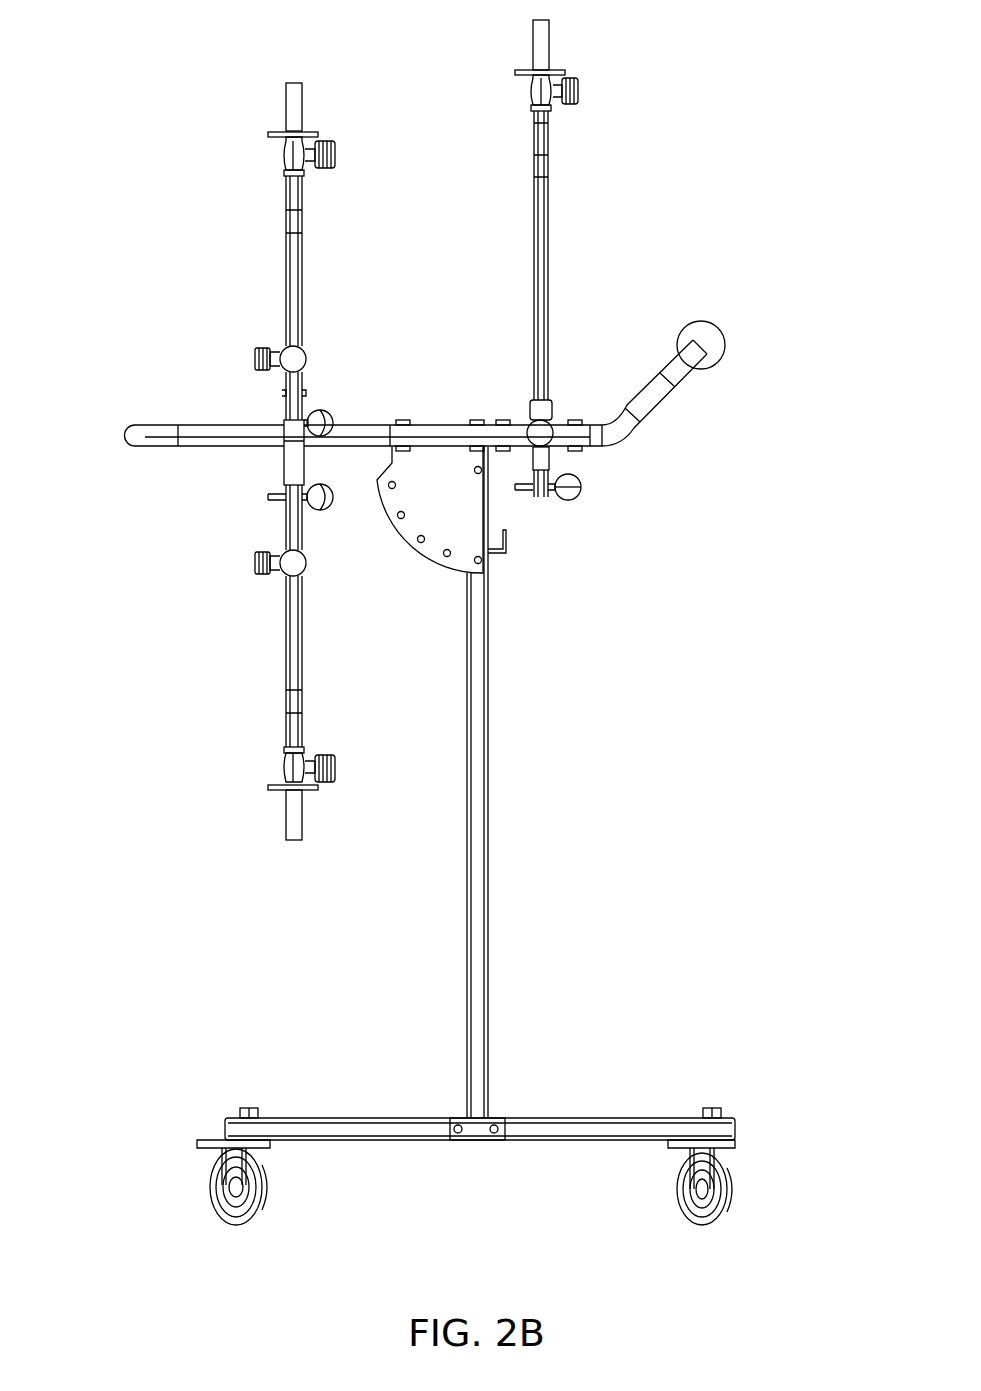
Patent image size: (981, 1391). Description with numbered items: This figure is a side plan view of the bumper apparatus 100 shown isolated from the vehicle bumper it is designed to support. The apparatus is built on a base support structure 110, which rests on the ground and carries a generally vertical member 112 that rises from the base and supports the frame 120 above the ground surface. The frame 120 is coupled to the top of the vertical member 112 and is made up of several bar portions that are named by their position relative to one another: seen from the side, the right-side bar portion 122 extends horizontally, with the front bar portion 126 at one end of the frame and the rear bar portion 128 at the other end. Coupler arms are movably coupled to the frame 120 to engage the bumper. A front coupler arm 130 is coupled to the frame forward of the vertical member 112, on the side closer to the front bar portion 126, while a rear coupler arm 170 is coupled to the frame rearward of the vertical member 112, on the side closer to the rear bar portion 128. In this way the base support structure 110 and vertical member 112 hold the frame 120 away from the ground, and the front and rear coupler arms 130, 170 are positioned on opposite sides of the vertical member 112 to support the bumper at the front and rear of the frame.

The bumper apparatus 100 is at (180, 55).
The base support structure 110 is at (616, 1052).
The vertical member 112 is at (490, 812).
The frame 120 is at (632, 522).
The right-side bar portion 122 is at (372, 428).
The front bar portion 126 is at (700, 355).
The rear bar portion 128 is at (143, 432).
The front coupler arm 130 is at (549, 266).
The rear coupler arm 170 is at (287, 258).